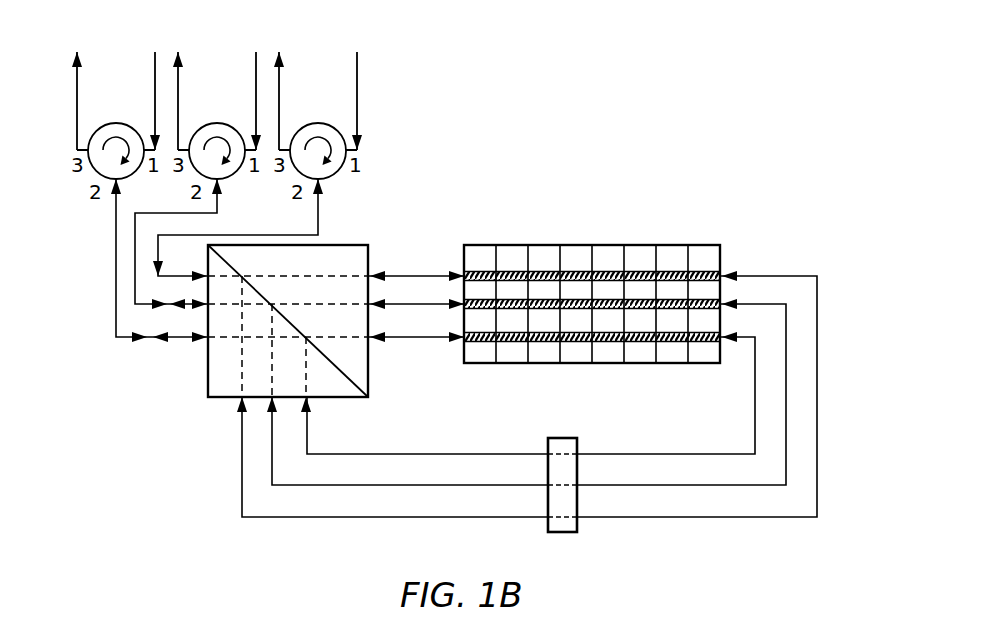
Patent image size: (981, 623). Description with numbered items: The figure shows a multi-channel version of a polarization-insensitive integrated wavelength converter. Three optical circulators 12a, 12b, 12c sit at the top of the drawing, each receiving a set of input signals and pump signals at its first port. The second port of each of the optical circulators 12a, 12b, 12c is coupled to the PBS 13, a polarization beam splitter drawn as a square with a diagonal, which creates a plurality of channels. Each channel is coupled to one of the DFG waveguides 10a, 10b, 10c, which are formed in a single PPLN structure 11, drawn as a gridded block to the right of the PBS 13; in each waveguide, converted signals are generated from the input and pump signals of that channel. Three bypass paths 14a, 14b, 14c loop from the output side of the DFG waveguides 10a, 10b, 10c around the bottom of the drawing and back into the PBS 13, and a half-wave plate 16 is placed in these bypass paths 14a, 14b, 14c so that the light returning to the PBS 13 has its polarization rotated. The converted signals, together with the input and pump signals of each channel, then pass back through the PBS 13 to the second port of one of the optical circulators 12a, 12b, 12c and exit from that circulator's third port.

The DFG waveguide 10a is at (555, 342).
The DFG waveguide 10b is at (572, 298).
The DFG waveguide 10c is at (635, 270).
The PPLN structure 11 is at (615, 296).
The optical circulator 12a is at (117, 123).
The optical circulator 12b is at (217, 123).
The optical circulator 12c is at (318, 123).
The PBS 13 is at (348, 245).
The bypass path 14a is at (413, 454).
The bypass path 14b is at (423, 485).
The bypass path 14c is at (415, 517).
The half-wave plate 16 is at (565, 438).